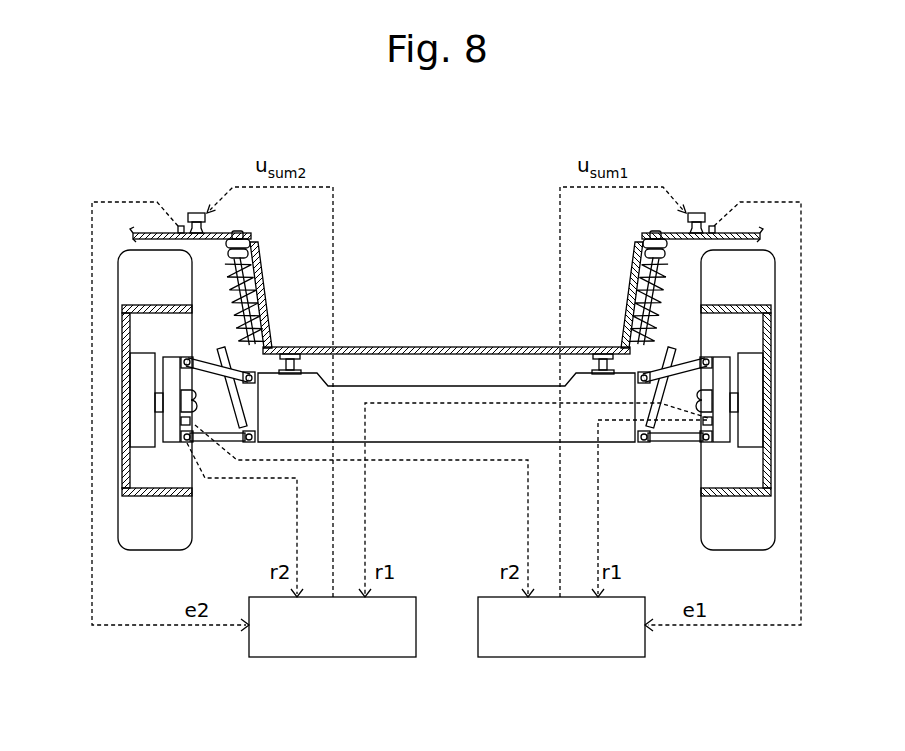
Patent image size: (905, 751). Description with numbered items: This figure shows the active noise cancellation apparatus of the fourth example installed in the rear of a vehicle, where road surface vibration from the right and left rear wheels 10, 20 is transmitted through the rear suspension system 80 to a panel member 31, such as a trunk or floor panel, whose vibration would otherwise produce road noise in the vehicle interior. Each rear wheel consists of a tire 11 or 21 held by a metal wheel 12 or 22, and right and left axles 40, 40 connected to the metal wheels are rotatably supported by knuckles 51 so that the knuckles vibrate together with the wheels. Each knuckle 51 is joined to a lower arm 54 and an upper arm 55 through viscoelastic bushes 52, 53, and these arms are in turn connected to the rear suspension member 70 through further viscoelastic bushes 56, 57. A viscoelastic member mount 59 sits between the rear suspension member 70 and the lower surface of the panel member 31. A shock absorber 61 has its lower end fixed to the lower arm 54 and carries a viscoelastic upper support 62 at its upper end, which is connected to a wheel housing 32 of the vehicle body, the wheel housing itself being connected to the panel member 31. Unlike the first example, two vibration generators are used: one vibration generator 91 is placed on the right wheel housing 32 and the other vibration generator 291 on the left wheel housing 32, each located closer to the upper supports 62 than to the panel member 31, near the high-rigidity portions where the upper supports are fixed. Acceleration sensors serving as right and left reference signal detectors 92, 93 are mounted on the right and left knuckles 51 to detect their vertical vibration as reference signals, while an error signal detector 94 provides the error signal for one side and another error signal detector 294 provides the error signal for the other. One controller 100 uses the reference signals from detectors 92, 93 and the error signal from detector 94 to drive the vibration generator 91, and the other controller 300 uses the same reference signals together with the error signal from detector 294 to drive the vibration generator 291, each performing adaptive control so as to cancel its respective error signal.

The right rear wheel 10 is at (835, 480).
The tire 11 is at (775, 518).
The metal wheel 12 is at (765, 474).
The left rear wheel 20 is at (58, 480).
The tire 21 is at (118, 518).
The metal wheel 22 is at (128, 474).
The panel member 31 is at (512, 347).
The wheel housing 32 is at (145, 232).
The axle 40 is at (140, 410).
The knuckle 51 is at (170, 380).
The bush 52 is at (187, 442).
The bush 53 is at (185, 358).
The lower arm 54 is at (215, 442).
The upper arm 55 is at (232, 352).
The bush 56 is at (250, 442).
The bush 57 is at (252, 372).
The member mount 59 is at (290, 352).
The shock absorber 61 is at (240, 262).
The upper support 62 is at (243, 232).
The rear suspension member 70 is at (470, 443).
The rear suspension system 80 is at (630, 447).
The vibration generator 91 is at (697, 212).
The reference signal detector 92 is at (712, 424).
The reference signal detector 93 is at (183, 430).
The error signal detector 94 is at (714, 226).
The controller 100 is at (530, 657).
The vibration generator 291 is at (196, 212).
The error signal detector 294 is at (179, 226).
The controller 300 is at (300, 657).